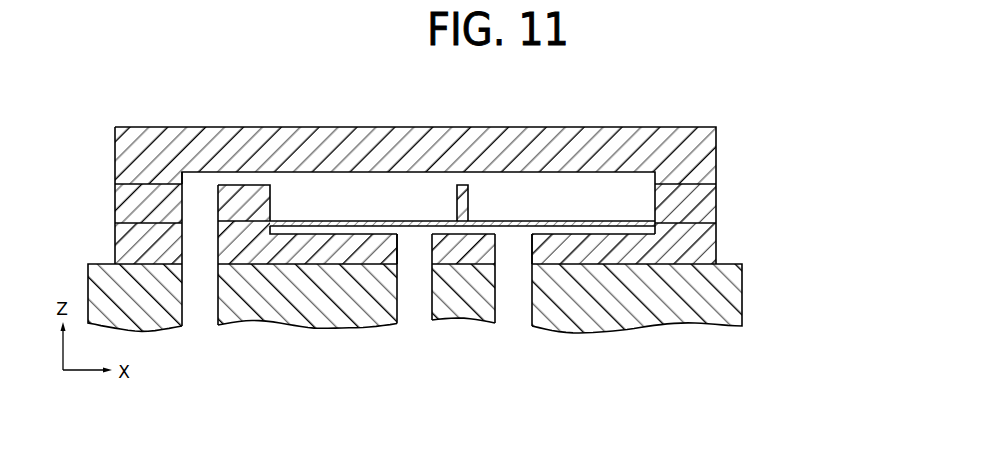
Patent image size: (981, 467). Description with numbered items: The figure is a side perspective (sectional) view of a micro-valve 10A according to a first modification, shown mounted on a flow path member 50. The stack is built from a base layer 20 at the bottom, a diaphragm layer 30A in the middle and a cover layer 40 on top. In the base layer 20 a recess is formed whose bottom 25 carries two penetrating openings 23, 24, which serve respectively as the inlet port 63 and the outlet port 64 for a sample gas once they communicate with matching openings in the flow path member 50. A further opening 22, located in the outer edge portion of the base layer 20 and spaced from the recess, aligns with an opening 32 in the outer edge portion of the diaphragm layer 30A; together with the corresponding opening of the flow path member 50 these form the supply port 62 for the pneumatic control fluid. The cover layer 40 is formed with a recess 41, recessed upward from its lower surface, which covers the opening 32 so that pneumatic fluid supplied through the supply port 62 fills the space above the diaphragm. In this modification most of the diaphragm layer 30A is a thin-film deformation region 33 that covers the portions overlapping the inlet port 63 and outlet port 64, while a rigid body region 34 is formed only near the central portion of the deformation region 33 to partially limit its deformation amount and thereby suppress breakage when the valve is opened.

The micro-valve 10A is at (724, 100).
The base layer 20 is at (646, 305).
The opening 22 is at (188, 243).
The opening 23 is at (399, 250).
The opening 24 is at (527, 250).
The bottom 25 is at (617, 234).
The diaphragm layer 30A is at (703, 207).
The opening 32 is at (188, 205).
The deformation region 33 is at (373, 221).
The rigid body region 34 is at (460, 185).
The cover layer 40 is at (703, 157).
The recess 41 is at (195, 171).
The flow path member 50 is at (730, 295).
The supply port 62 is at (201, 334).
The inlet port 63 is at (414, 330).
The outlet port 64 is at (511, 335).